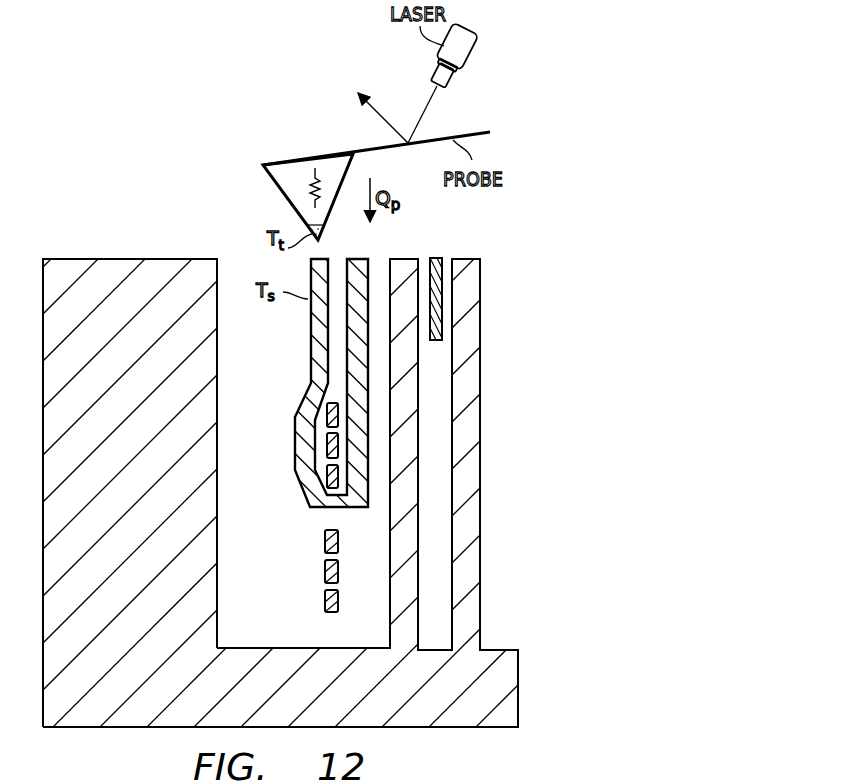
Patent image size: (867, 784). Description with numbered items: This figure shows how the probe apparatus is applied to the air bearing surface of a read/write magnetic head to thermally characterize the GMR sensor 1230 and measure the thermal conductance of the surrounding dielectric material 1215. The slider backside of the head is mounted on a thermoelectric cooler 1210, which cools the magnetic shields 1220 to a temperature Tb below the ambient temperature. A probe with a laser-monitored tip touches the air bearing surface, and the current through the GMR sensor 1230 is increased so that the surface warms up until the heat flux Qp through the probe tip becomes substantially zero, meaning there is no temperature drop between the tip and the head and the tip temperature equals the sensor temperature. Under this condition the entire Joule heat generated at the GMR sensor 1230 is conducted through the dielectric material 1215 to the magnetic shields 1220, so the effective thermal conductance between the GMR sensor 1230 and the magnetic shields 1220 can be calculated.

The thermoelectric cooler 1210 is at (107, 258).
The magnetic shields 1220 is at (482, 293).
The GMR sensor 1230 is at (441, 257).
The dielectric material 1215 is at (450, 337).